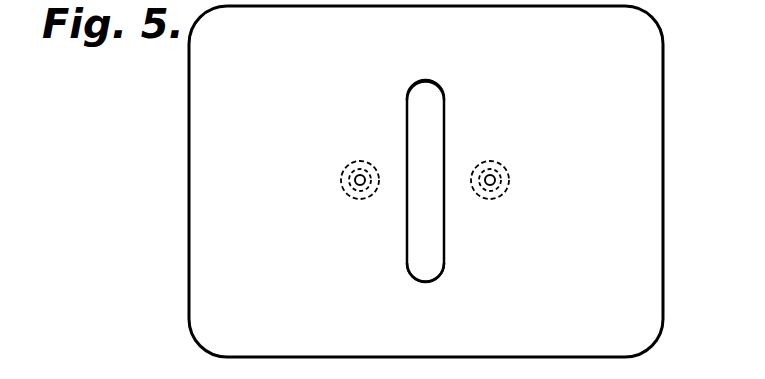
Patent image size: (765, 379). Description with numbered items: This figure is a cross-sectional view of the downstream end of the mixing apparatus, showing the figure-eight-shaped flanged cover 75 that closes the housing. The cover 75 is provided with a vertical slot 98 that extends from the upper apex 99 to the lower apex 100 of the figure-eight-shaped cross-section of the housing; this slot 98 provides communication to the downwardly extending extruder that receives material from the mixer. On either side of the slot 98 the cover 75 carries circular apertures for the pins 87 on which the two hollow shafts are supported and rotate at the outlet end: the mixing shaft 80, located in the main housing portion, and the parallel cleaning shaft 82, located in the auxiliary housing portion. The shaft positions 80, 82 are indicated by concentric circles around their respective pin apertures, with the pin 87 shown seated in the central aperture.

The flanged cover 75 is at (189, 158).
The mixing shaft 80 is at (358, 161).
The cleaning shaft 82 is at (490, 161).
The pin 87 is at (490, 185).
The vertical slot 98 is at (411, 222).
The apex 99 is at (423, 80).
The apex 100 is at (424, 283).